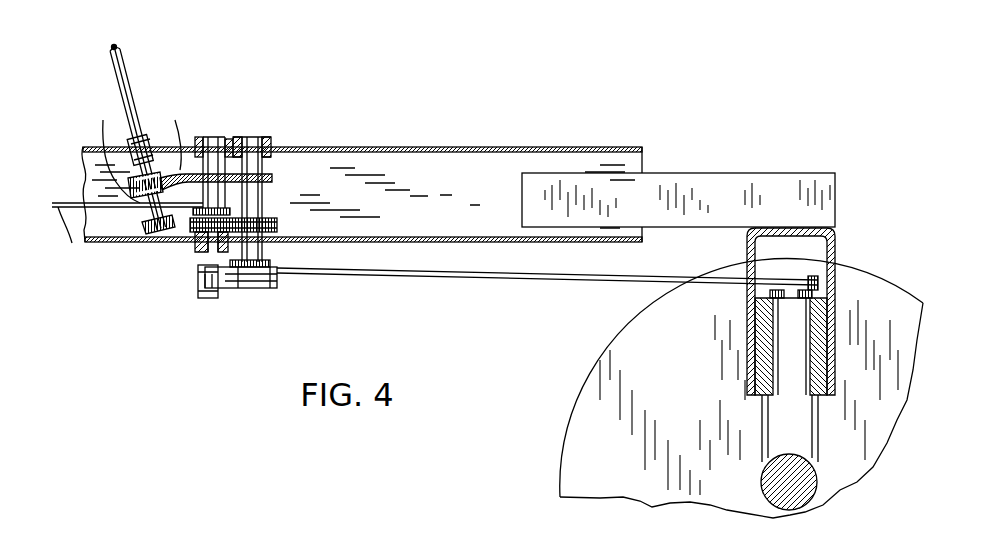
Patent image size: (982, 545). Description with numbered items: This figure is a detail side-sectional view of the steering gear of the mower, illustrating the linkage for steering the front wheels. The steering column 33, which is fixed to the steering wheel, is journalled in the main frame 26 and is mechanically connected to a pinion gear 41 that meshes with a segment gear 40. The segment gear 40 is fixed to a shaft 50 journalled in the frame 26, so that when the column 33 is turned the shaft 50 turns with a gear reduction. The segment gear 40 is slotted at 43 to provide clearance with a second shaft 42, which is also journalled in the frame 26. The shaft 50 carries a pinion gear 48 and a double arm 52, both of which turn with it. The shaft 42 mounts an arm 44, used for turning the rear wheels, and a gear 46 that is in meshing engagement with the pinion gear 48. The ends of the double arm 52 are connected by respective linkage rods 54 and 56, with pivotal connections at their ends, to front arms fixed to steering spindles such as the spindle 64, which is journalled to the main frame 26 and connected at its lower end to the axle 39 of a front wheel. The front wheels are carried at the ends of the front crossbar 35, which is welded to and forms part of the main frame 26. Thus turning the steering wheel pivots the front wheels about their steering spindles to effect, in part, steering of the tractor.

The main frame 26 is at (478, 147).
The steering column 33 is at (130, 90).
The front crossbar 35 is at (837, 252).
The axle 39 is at (767, 483).
The segment gear 40 is at (176, 176).
The pinion gear 41 is at (103, 125).
The shaft 42 is at (210, 136).
The slot 43 is at (248, 136).
The arm 44 is at (182, 240).
The gear 46 is at (197, 237).
The pinion gear 48 is at (274, 221).
The shaft 50 is at (268, 136).
The double arm 52 is at (256, 292).
The linkage rod 54 is at (127, 240).
The linkage rod 56 is at (553, 283).
The steering spindle 64 is at (763, 418).